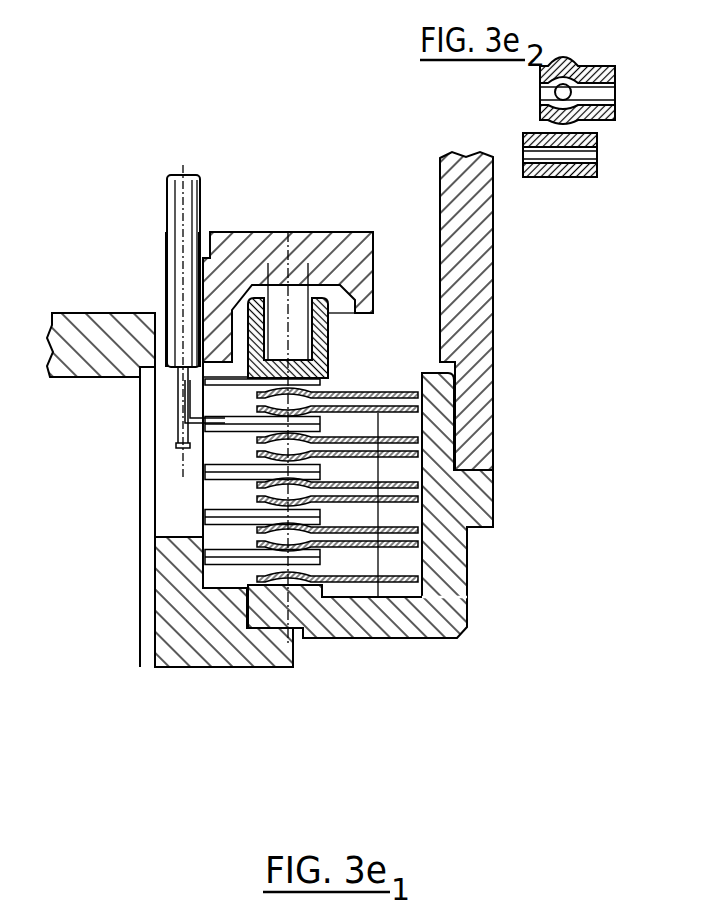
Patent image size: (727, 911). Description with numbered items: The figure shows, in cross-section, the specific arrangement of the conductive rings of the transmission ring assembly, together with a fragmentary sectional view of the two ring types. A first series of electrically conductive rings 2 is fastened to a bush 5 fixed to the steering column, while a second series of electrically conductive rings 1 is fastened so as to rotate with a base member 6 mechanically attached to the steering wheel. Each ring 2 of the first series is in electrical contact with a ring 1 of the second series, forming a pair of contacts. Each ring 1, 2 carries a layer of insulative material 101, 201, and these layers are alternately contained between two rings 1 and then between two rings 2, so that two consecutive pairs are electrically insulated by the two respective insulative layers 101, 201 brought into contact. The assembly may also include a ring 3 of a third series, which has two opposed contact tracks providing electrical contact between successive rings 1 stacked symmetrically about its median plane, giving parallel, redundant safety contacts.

In FIG. 3e1, the ring of the second series 1 is at (410, 434).
In FIG. 3e2, the ring of the second series 1 is at (599, 68).
In FIG. 3e1, the insulative layer of ring 1 101 is at (425, 440).
In FIG. 3e1, the ring of the first series 2 is at (243, 418).
In FIG. 3e2, the ring of the first series 2 is at (537, 132).
In FIG. 3e1, the insulative layer of ring 2 201 is at (220, 432).
In FIG. 3e1, the ring of the third series 3 is at (420, 494).
In FIG. 3e1, the bush 5 is at (208, 642).
In FIG. 3e1, the base member 6 is at (407, 615).